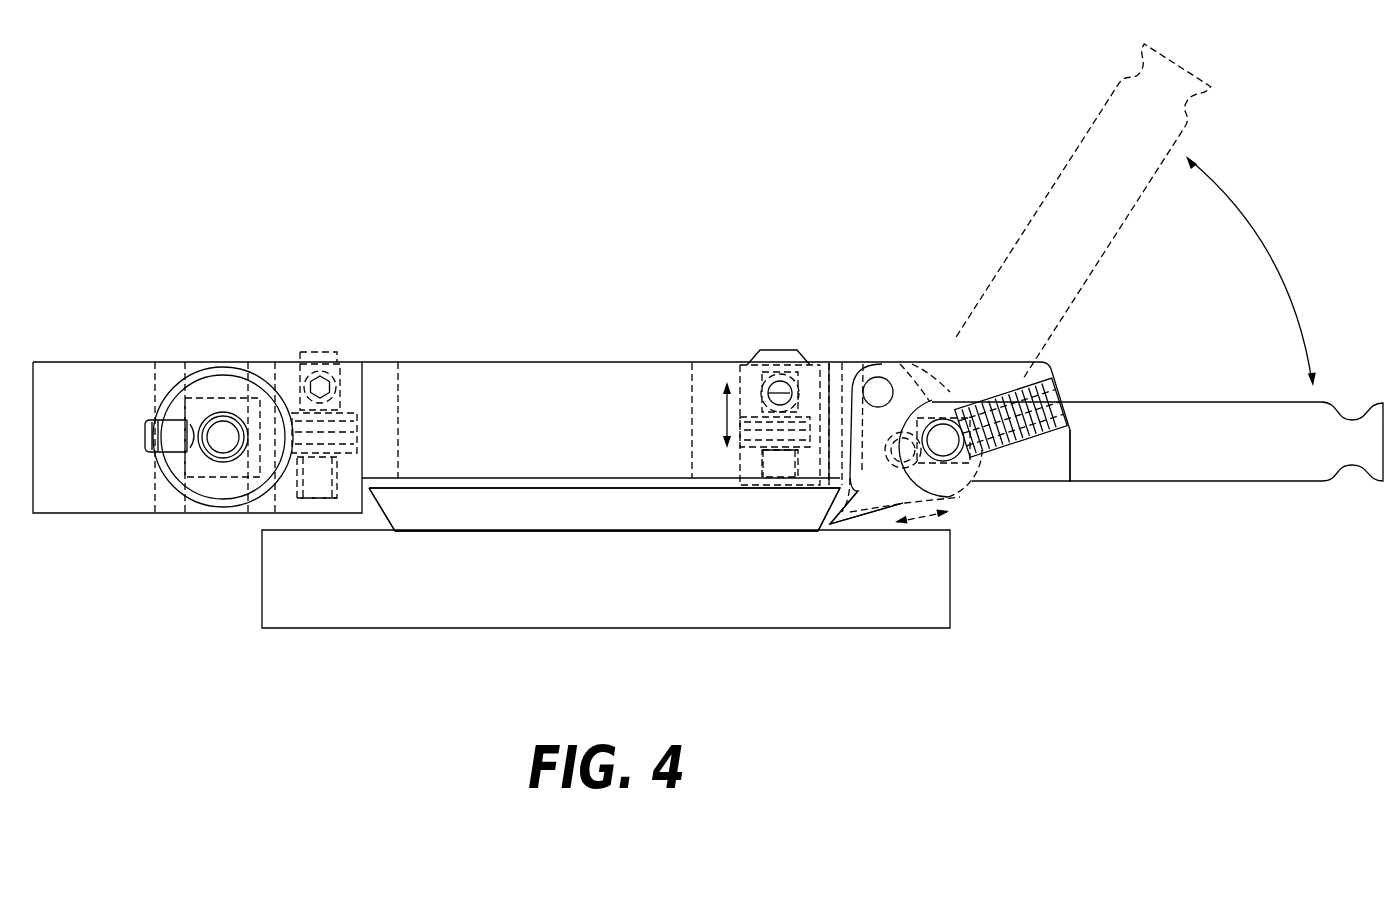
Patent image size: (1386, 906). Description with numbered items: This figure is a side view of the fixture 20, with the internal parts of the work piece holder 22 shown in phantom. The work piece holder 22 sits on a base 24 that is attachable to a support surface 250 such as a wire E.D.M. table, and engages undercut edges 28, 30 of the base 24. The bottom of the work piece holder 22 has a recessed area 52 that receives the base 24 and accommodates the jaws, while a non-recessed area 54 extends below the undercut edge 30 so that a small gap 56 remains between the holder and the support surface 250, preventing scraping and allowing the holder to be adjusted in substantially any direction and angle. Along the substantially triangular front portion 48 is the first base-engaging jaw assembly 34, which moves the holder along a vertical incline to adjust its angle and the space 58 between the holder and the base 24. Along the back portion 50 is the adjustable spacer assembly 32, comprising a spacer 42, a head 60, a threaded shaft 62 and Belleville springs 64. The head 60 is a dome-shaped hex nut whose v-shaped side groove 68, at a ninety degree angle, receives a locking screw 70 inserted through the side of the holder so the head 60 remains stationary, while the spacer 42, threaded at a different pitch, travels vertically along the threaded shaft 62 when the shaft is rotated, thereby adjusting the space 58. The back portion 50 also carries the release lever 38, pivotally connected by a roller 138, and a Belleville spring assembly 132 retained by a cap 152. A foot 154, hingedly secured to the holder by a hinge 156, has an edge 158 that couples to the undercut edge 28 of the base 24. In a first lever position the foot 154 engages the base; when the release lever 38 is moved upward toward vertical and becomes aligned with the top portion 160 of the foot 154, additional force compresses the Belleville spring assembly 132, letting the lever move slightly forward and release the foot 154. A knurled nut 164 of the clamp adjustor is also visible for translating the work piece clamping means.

The fixture 20 is at (540, 143).
The work piece holder 22 is at (822, 270).
The base 24 is at (665, 522).
The undercut edge 28 is at (825, 541).
The undercut edge 30 is at (376, 531).
The adjustable spacer assembly 32 is at (784, 338).
The first base-engaging jaw assembly 34 is at (352, 386).
The release lever 38 is at (1178, 402).
The spacer 42 is at (836, 366).
The front portion 48 is at (286, 434).
The back portion 50 is at (906, 289).
The recessed area 52 is at (496, 470).
The non-recessed area 54 is at (172, 532).
The gap 56 is at (323, 517).
The space 58 is at (550, 489).
The head 60 is at (742, 355).
The threaded shaft 62 is at (768, 348).
The Belleville springs 64 is at (698, 424).
The side groove 68 is at (803, 356).
The locking screw 70 is at (768, 393).
The Belleville spring assembly 132 is at (1007, 445).
The roller 138 is at (913, 368).
The cap 152 is at (1055, 380).
The foot 154 is at (873, 500).
The hinge 156 is at (880, 378).
The edge 158 is at (848, 520).
The top portion 160 is at (937, 362).
The knurled nut 164 is at (219, 391).
The support surface 250 is at (945, 586).